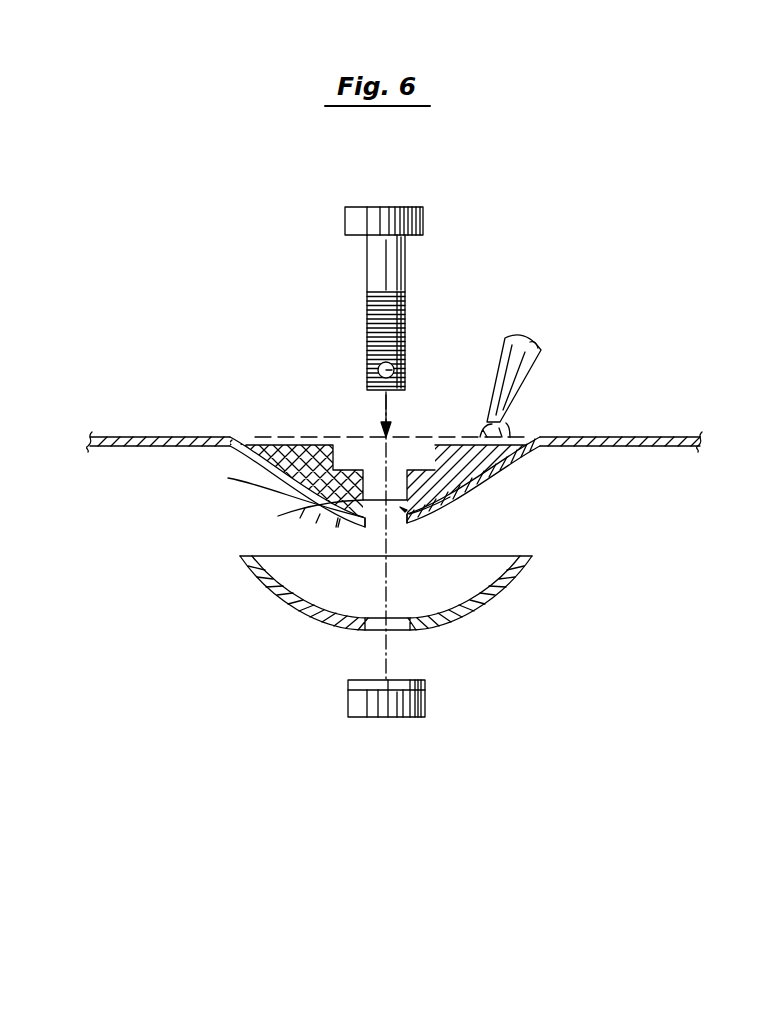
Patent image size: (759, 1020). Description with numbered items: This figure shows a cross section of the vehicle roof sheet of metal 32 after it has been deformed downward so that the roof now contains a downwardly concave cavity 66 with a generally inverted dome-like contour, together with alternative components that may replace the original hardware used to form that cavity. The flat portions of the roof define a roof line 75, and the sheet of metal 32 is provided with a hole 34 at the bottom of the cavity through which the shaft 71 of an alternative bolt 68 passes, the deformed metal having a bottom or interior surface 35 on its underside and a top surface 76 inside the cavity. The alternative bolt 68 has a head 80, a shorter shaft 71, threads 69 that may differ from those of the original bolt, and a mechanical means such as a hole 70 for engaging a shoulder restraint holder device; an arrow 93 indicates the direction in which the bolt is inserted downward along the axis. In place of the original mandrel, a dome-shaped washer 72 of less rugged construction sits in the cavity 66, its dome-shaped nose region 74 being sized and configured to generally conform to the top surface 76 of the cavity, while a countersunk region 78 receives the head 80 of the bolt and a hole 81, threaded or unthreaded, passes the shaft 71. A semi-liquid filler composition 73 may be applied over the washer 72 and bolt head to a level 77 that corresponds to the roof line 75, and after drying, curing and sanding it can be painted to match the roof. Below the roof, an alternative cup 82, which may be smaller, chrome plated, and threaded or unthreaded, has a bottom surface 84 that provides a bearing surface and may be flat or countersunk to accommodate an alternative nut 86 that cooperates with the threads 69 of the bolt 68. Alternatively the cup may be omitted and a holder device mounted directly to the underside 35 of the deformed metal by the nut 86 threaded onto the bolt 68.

The sheet of metal 32 is at (247, 461).
The hole 34 is at (373, 525).
The bottom or interior surface 35 is at (413, 523).
The downwardly concave cavity 66 is at (268, 494).
The alternative bolt 68 is at (407, 274).
The threads 69 is at (407, 332).
The hole 70 is at (379, 364).
The shaft 71 is at (367, 275).
The dome-shaped washer 72 is at (503, 483).
The semi-liquid filler composition 73 is at (502, 430).
The dome-shaped nose region 74 is at (283, 515).
The roof line 75 is at (112, 437).
The top surface 76 is at (463, 498).
The level 77 is at (347, 435).
The countersunk region 78 is at (432, 468).
The head 80 is at (423, 218).
The hole 81 is at (312, 446).
The alternative cup 82 is at (500, 587).
The bottom surface 84 is at (413, 632).
The alternative nut 86 is at (348, 705).
The insertion arrow 93 is at (380, 410).